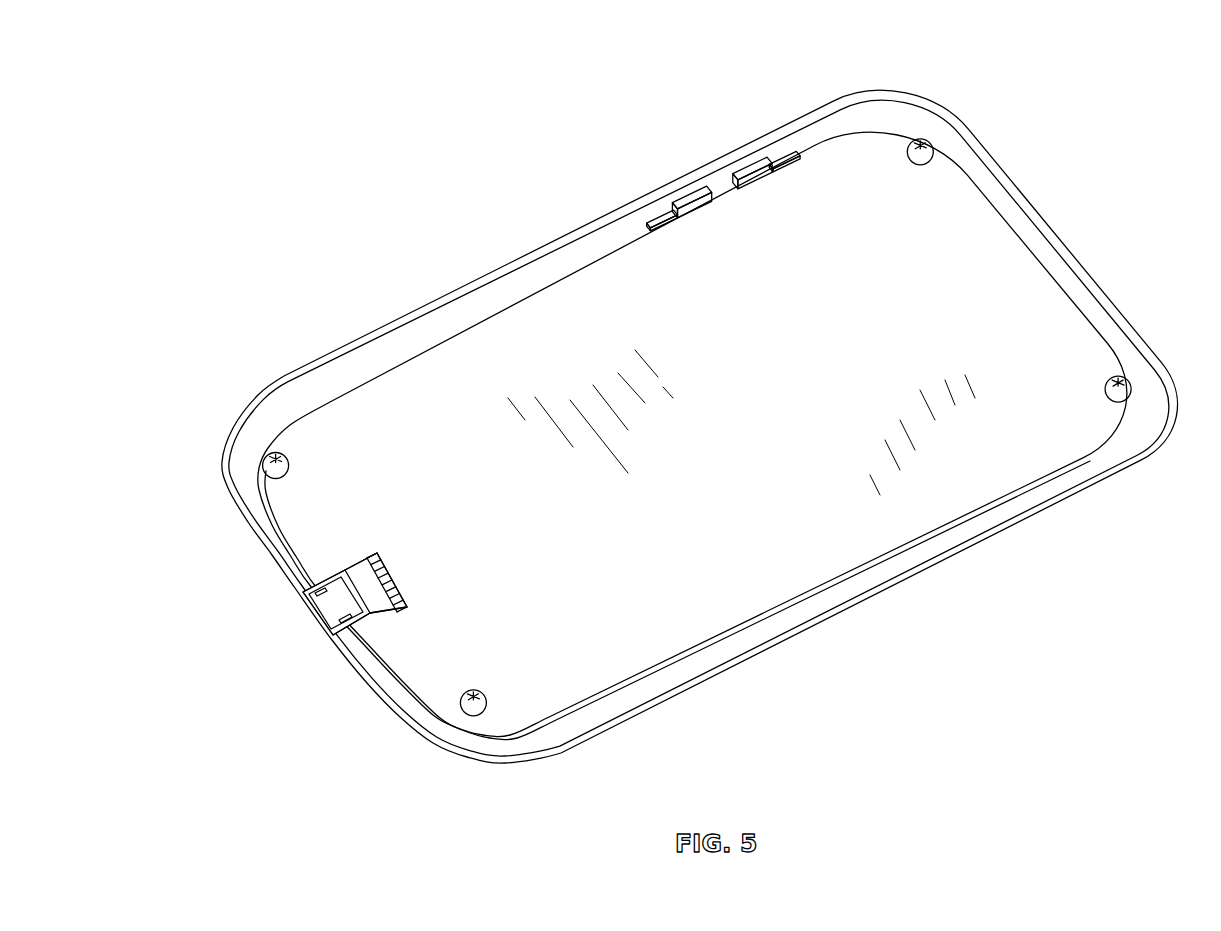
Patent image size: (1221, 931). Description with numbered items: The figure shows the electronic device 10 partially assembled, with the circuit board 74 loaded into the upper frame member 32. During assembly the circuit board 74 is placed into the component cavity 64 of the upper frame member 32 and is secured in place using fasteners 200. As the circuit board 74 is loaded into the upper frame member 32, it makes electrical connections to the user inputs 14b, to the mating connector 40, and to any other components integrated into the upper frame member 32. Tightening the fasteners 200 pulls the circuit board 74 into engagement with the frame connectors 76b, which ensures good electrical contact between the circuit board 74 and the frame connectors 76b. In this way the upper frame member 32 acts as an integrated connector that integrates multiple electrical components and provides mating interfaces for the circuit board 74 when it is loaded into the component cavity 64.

The electronic device 10 is at (331, 193).
The user inputs 14b is at (695, 197).
The upper frame member 32 is at (547, 268).
The mating connector 40 is at (333, 608).
The component cavity 64 is at (350, 378).
The circuit board 74 is at (480, 378).
The frame connectors 76b is at (658, 226).
The fasteners 200 is at (263, 463).